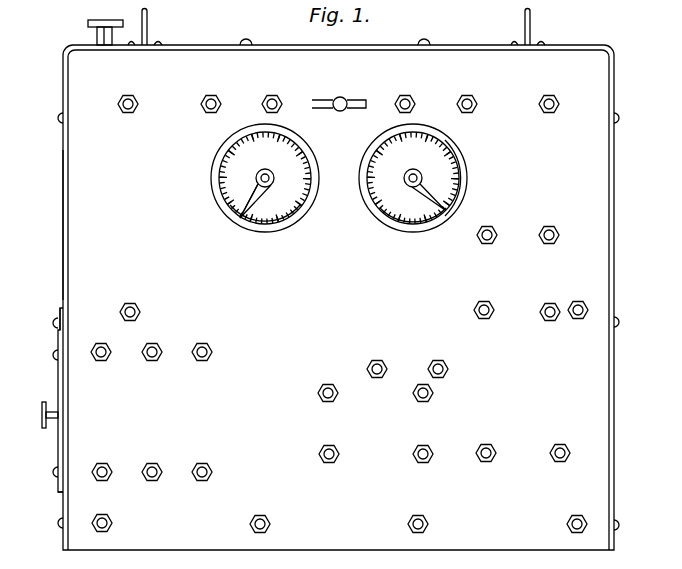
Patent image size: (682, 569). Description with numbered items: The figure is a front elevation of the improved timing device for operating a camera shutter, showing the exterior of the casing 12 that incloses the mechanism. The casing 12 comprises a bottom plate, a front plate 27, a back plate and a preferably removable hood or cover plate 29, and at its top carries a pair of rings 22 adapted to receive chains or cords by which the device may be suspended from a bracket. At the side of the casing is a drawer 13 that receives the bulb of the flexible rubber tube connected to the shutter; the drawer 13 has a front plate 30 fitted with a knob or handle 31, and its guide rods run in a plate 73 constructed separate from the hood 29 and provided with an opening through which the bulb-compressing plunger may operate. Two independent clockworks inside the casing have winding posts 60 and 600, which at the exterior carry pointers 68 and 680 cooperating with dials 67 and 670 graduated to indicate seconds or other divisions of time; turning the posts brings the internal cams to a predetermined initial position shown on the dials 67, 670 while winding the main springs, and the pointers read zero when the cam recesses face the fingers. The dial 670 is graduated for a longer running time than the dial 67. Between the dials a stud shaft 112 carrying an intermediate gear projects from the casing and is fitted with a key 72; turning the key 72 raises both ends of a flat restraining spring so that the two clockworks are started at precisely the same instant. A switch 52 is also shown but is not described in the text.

The casing 12 is at (350, 297).
The drawer 13 is at (50, 347).
The rings 22 is at (148, 22).
The front plate 27 is at (80, 231).
The hood or cover plate 29 is at (245, 44).
The front plate of drawer 30 is at (60, 443).
The knob or handle 31 is at (45, 421).
The switch 52 is at (97, 33).
The winding post 60 is at (413, 178).
The dial 67 is at (406, 231).
The pointer 68 is at (472, 178).
The key 72 is at (359, 100).
The plate 73 is at (62, 495).
The stud shaft 112 is at (334, 99).
The winding post 600 is at (265, 178).
The dial 670 is at (277, 226).
The pointer 680 is at (240, 216).